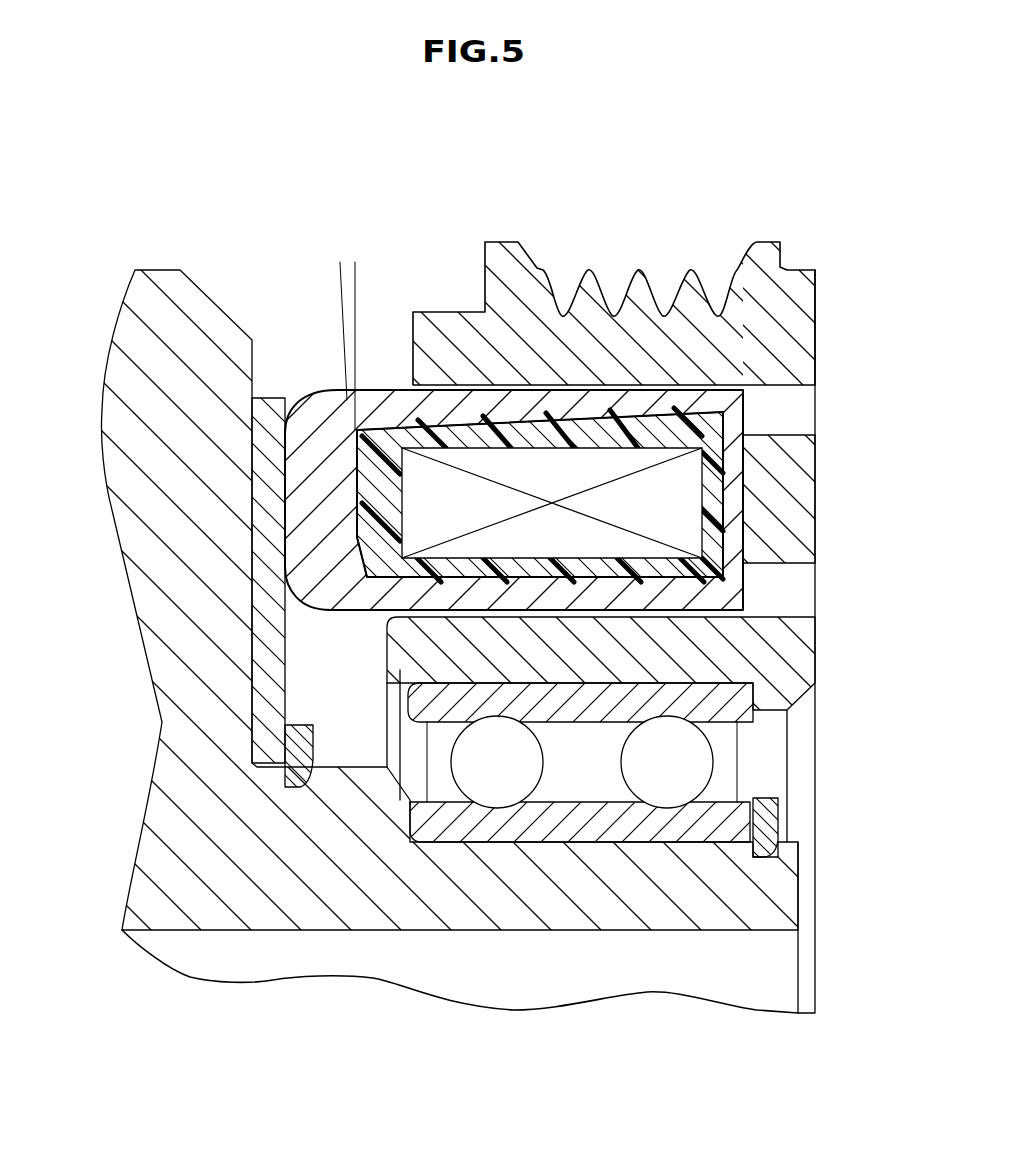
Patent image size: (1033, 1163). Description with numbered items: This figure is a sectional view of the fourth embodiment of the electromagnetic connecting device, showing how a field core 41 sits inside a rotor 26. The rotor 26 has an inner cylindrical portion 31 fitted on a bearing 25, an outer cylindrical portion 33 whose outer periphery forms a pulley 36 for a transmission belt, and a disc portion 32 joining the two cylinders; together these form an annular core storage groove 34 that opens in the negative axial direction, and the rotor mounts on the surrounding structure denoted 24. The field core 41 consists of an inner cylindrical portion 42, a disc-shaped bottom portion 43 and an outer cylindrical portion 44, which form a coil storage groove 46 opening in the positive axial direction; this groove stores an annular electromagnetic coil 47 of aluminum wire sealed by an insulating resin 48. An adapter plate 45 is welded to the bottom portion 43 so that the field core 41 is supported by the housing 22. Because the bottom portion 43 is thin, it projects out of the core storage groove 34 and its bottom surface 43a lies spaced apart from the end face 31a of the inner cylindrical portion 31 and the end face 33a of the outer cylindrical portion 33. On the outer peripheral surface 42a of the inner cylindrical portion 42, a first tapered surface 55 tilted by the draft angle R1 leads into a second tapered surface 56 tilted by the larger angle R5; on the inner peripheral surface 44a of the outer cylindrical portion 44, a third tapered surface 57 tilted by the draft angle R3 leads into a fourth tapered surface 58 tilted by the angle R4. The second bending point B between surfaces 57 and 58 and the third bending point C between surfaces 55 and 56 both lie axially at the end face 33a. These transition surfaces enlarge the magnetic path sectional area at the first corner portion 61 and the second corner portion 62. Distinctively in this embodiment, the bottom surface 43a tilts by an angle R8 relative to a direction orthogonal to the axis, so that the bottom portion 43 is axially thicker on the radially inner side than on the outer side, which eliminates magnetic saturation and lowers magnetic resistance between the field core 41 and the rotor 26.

The housing 22 is at (152, 270).
The motor housing base 24 is at (765, 897).
The bearing 25 is at (538, 830).
The rotor 26 is at (775, 242).
The inner cylindrical portion 31 is at (440, 655).
The end face of the inner cylindrical portion 31a is at (385, 652).
The disc portion 32 is at (795, 535).
The outer cylindrical portion 33 is at (445, 323).
The end face of the outer cylindrical portion 33a is at (403, 330).
The core storage groove 34 is at (630, 395).
The pulley 36 is at (600, 290).
The field core 41 is at (300, 395).
The inner cylindrical portion 42 is at (700, 580).
The outer peripheral surface 42a is at (670, 580).
The bottom portion 43 is at (303, 515).
The bottom surface 43a is at (290, 565).
The outer cylindrical portion 44 is at (558, 410).
The inner peripheral surface 44a is at (507, 258).
The adapter plate 45 is at (263, 738).
The coil storage groove 46 is at (705, 415).
The electromagnetic coil 47 is at (677, 497).
The insulating resin 48 is at (717, 475).
The first tapered surface 55 is at (580, 582).
The second tapered surface 56 is at (396, 530).
The third tapered surface 57 is at (565, 430).
The fourth tapered surface 58 is at (396, 468).
The first corner portion 61 is at (350, 600).
The second corner portion 62 is at (347, 417).
The second bending point B is at (410, 425).
The third bending point C is at (380, 593).
The angle R1 is at (610, 588).
The angle R3 is at (608, 412).
The angle R4 is at (357, 427).
The angle R5 is at (612, 586).
The angle R8 is at (405, 282).